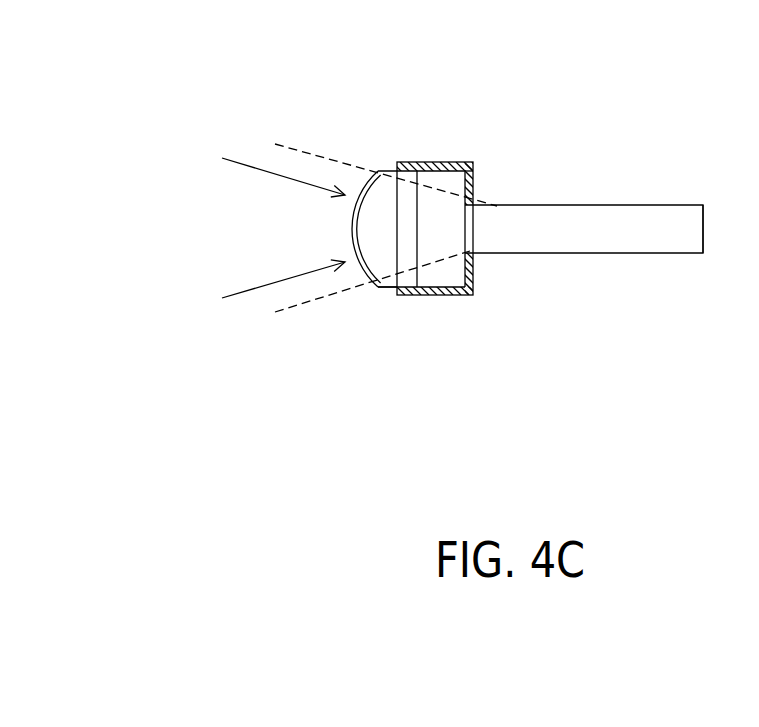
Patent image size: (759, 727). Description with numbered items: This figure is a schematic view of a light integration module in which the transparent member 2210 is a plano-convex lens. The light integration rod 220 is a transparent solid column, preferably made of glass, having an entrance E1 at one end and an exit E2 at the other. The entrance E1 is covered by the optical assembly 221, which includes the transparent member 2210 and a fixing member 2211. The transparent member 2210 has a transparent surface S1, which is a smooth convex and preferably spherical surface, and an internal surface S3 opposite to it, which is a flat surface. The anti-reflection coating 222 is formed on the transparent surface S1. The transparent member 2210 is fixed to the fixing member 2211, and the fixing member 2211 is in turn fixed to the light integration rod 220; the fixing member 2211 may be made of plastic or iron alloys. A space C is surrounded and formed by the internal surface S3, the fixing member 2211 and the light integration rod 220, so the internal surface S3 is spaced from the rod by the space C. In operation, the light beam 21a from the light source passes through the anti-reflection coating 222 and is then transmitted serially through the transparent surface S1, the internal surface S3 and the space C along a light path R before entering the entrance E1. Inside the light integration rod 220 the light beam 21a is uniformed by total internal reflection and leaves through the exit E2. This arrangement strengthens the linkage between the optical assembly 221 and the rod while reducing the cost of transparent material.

The optical assembly 221 is at (483, 83).
The transparent member 2210 is at (396, 167).
The fixing member 2211 is at (453, 162).
The anti-reflection coating 222 is at (373, 170).
The light integration rod 220 is at (646, 227).
The entrance E1 is at (467, 238).
The exit E2 is at (707, 235).
The transparent surface S1 is at (406, 275).
The internal surface S3 is at (418, 272).
The space C is at (440, 187).
The light path R is at (382, 218).
The light beam 21a is at (345, 228).